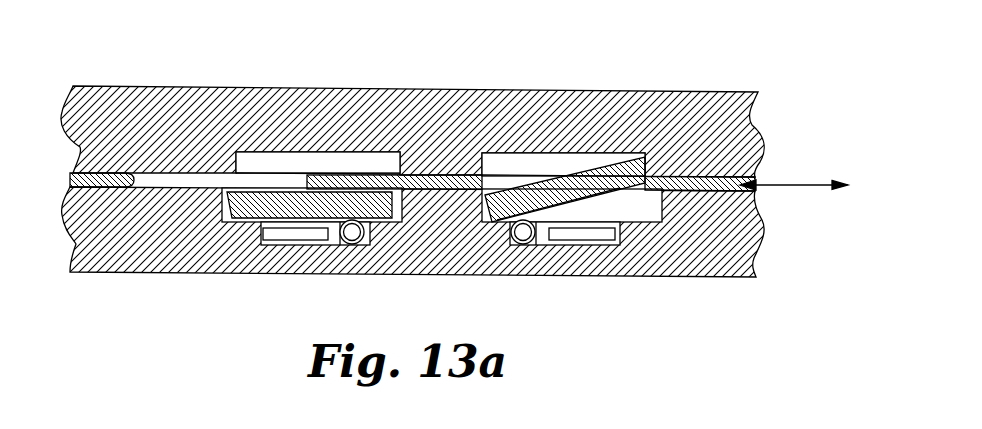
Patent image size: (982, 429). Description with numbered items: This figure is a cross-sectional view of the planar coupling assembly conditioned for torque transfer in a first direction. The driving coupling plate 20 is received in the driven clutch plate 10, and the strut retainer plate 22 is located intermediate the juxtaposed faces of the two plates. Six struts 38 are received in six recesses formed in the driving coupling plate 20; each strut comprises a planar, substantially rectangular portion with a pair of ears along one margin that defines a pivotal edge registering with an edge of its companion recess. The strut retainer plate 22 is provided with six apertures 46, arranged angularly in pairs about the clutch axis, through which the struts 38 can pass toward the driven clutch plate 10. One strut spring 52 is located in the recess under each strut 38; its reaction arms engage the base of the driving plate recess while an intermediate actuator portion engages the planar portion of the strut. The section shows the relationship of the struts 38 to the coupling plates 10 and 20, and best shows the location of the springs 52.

The driven clutch plate 10 is at (735, 122).
The driving coupling plate 20 is at (738, 218).
The strut retainer plate 22 is at (722, 168).
The strut 38 is at (287, 203).
The aperture 46 is at (130, 178).
The strut spring 52 is at (342, 250).